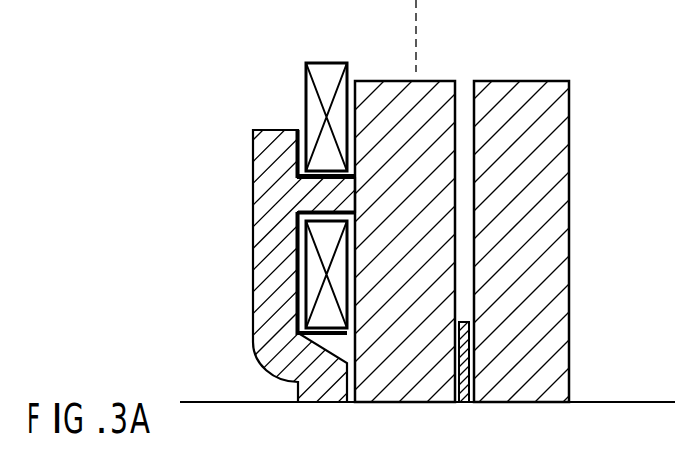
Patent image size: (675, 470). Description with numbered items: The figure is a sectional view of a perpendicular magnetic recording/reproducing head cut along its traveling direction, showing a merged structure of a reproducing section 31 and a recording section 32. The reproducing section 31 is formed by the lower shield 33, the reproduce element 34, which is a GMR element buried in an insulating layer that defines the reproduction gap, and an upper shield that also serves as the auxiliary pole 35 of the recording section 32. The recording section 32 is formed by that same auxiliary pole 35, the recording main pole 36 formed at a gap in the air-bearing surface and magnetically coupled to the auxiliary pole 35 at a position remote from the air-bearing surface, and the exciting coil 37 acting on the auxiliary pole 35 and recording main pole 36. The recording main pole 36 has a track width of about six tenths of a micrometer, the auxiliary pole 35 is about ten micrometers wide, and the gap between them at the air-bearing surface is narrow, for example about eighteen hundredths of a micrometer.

The reproducing section 31 is at (570, 61).
The recording section 32 is at (398, 61).
The lower shield 33 is at (555, 402).
The reproduce element 34 is at (467, 402).
The auxiliary pole 35 is at (403, 403).
The recording main pole 36 is at (317, 402).
The exciting coil 37 is at (300, 243).